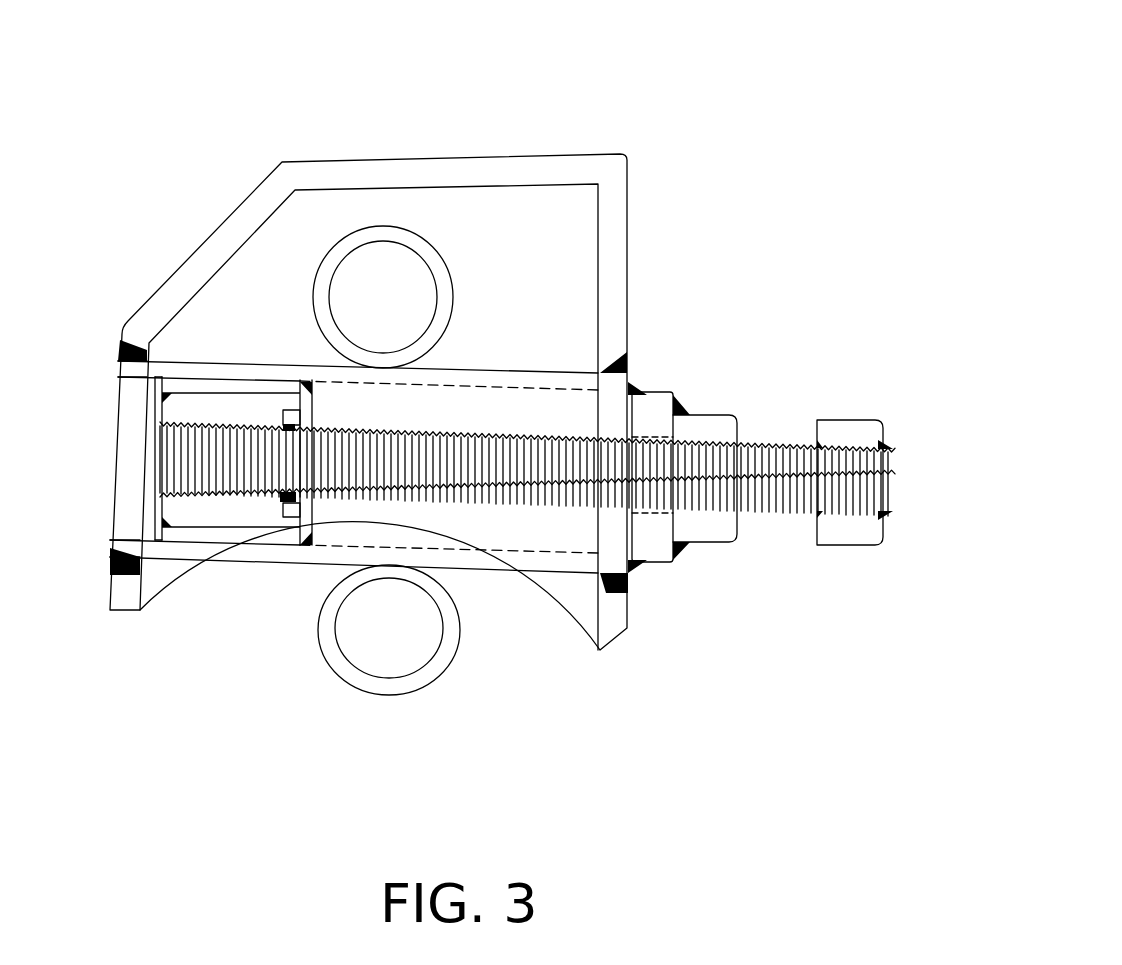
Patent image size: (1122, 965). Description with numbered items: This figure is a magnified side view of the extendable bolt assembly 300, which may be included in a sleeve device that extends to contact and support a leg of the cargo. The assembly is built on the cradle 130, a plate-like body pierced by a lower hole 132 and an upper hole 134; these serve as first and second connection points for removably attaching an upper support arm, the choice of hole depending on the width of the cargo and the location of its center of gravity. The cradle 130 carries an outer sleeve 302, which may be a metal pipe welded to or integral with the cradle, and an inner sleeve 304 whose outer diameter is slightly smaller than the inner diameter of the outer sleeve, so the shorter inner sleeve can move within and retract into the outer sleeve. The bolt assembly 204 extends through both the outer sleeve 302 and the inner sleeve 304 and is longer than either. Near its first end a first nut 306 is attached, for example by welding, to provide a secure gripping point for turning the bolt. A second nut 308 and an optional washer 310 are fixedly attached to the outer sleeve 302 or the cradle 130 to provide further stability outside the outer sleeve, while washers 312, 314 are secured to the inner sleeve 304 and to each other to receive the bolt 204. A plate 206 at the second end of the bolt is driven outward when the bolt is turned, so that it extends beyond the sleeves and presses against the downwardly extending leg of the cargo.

The extendable bolt assembly 300 is at (773, 85).
The cradle 130 is at (560, 133).
The lower hole 132 is at (452, 598).
The upper hole 134 is at (428, 243).
The plate 206 is at (112, 452).
The outer sleeve 302 is at (455, 367).
The inner sleeve 304 is at (192, 530).
The washer 312 is at (317, 408).
The washer 314 is at (163, 407).
The bolt assembly 204 is at (758, 442).
The washer 310 is at (652, 390).
The second nut 308 is at (710, 415).
The first nut 306 is at (828, 545).